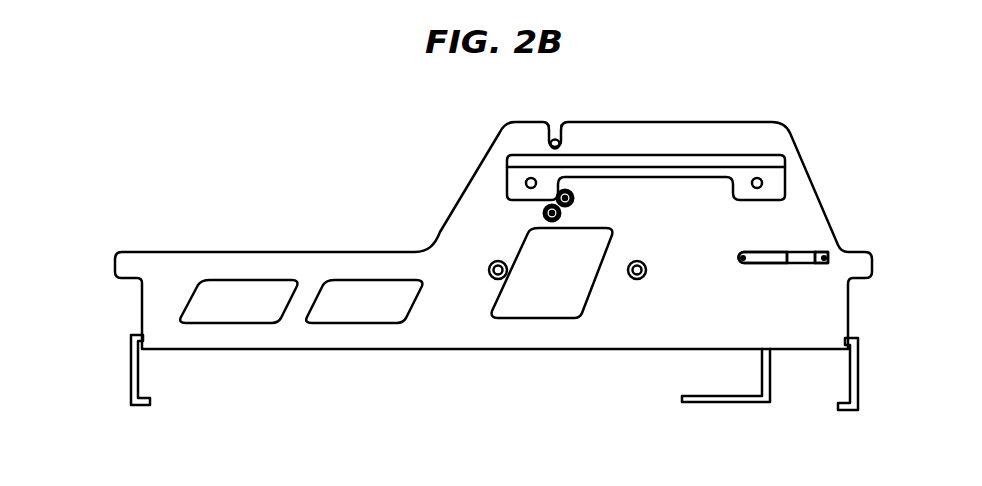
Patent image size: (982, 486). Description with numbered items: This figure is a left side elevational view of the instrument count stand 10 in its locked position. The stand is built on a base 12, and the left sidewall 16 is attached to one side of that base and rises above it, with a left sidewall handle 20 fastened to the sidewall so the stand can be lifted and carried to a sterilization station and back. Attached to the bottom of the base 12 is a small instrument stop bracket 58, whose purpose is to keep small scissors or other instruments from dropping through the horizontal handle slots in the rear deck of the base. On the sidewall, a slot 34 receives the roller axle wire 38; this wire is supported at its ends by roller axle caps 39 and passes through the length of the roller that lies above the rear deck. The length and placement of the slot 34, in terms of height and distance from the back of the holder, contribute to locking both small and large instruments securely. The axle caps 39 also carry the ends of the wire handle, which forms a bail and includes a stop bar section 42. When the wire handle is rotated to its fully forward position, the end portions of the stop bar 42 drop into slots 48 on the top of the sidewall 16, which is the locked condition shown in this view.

The instrument count stand 10 is at (178, 132).
The base 12 is at (128, 378).
The left sidewall 16 is at (656, 328).
The left sidewall handle 20 is at (680, 160).
The slot 34 is at (828, 258).
The roller axle wire 38 is at (740, 266).
The roller axle cap 39 is at (770, 257).
The stop bar section 42 is at (549, 140).
The slot 48 is at (560, 132).
The small instrument stop bracket 58 is at (707, 400).